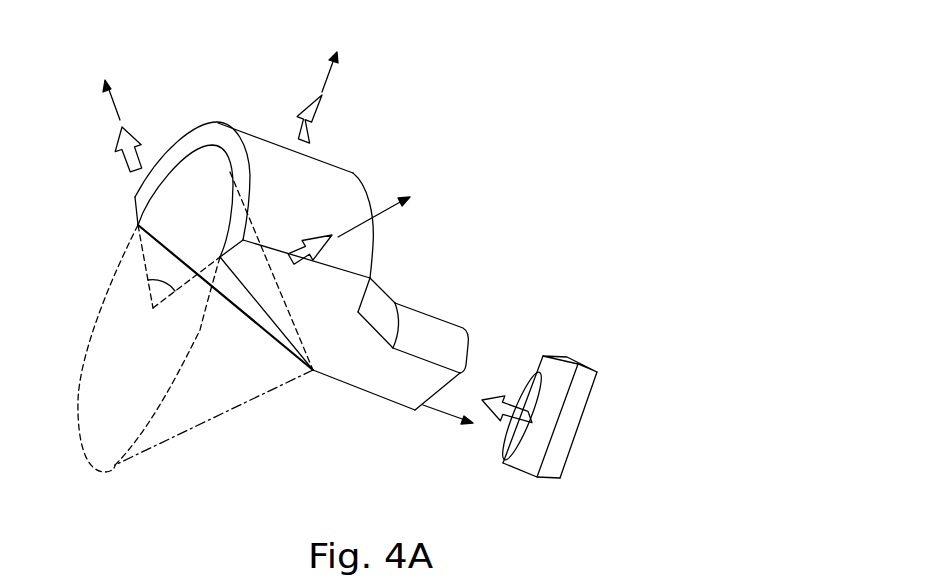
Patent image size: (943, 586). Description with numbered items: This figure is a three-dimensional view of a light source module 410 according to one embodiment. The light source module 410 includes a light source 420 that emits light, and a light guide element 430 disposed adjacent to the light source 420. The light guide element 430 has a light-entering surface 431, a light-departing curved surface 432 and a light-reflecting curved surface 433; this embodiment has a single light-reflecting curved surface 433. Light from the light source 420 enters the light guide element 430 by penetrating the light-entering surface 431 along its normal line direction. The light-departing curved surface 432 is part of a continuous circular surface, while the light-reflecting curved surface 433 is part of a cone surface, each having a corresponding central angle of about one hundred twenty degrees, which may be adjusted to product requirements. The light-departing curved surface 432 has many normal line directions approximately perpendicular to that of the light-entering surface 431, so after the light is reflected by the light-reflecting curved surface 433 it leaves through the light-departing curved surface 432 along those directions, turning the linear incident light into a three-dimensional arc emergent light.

The light source module 410 is at (608, 140).
The light source 420 is at (570, 422).
The light guide element 430 is at (377, 302).
The light-entering surface 431 is at (470, 352).
The light-departing curved surface 432 is at (333, 183).
The light-reflecting curved surface 433 is at (252, 307).